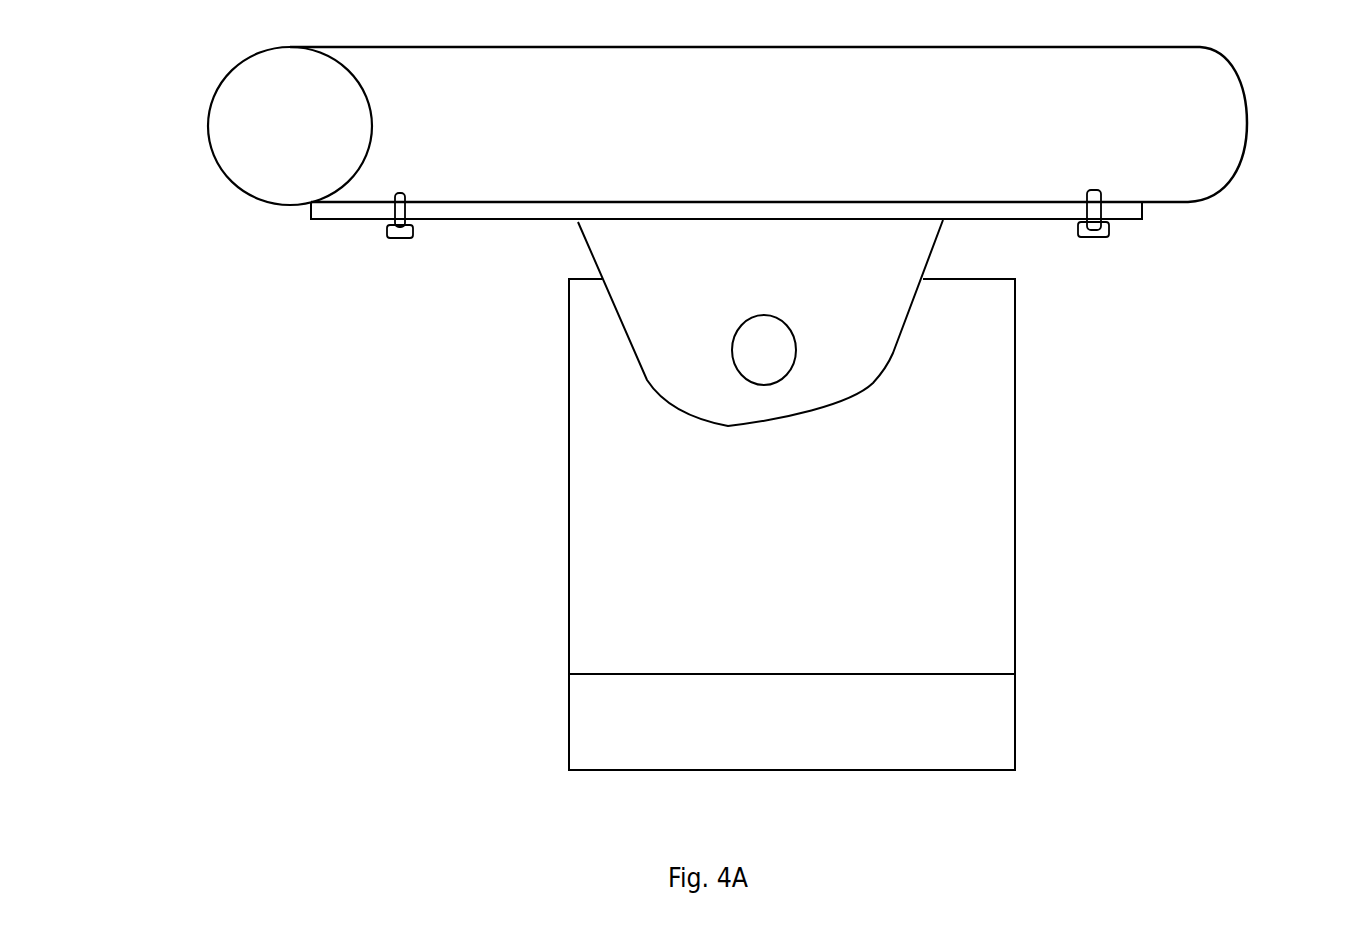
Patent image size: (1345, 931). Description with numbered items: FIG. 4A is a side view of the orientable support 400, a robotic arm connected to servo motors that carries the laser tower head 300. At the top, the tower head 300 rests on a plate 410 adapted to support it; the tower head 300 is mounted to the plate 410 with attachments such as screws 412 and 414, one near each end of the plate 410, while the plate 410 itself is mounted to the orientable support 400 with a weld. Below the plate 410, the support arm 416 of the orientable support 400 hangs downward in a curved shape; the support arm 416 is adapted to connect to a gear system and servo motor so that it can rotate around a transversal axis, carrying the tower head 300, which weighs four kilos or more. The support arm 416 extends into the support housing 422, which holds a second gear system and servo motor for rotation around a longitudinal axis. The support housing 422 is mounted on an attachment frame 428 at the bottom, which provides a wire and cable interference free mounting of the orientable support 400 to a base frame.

The tower head 300 is at (727, 126).
The orientable support 400 is at (543, 587).
The plate 410 is at (1142, 219).
The screw 412 is at (1100, 237).
The screw 414 is at (405, 240).
The support arm 416 is at (587, 255).
The support housing 422 is at (1016, 508).
The attachment frame 428 is at (1016, 728).